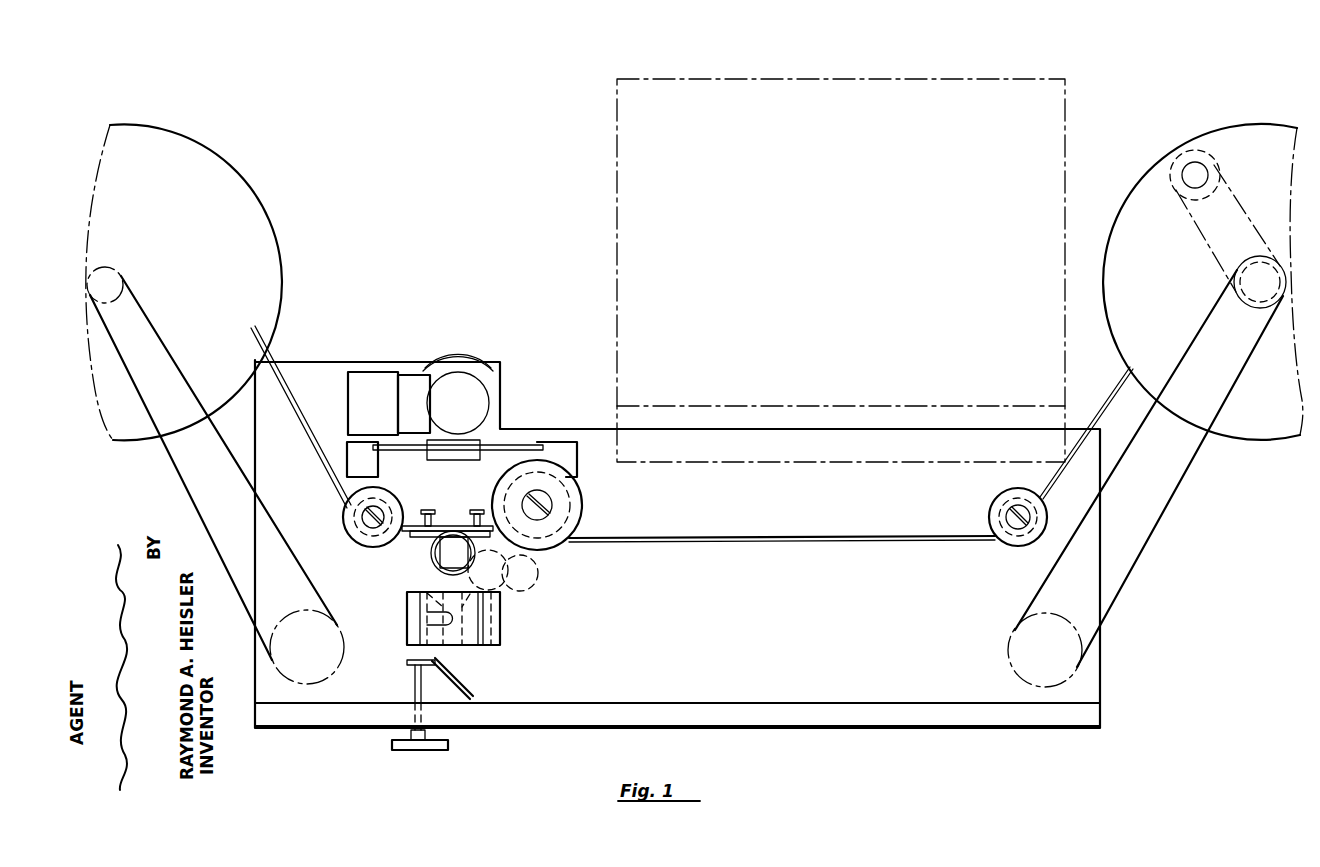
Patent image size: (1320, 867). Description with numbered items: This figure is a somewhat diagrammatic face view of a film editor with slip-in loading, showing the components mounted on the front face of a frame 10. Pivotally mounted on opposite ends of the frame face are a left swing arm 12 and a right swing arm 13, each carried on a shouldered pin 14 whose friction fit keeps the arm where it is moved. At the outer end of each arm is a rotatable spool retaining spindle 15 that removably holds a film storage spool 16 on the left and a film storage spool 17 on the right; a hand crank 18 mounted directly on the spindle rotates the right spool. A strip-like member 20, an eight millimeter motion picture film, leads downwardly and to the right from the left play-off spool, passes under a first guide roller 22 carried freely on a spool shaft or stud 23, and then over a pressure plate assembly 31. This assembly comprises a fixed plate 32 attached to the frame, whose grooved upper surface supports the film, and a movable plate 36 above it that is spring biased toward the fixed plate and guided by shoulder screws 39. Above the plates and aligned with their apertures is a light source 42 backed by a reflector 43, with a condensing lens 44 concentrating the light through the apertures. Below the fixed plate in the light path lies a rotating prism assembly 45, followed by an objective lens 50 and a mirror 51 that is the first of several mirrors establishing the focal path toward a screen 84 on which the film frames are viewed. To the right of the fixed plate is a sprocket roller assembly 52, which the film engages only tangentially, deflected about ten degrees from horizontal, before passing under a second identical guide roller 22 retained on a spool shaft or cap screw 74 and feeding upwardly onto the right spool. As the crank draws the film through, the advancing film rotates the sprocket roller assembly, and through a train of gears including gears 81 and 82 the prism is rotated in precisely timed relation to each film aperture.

The frame 10 is at (880, 718).
The left swing arm 12 is at (198, 449).
The right swing arm 13 is at (1180, 452).
The shouldered pins 14 is at (333, 653).
The spool retaining spindle 15 is at (108, 280).
The film storage spool 16 is at (257, 256).
The film storage spool 17 is at (1103, 261).
The hand crank 18 is at (1243, 232).
The strip-like member 20 is at (267, 344).
The guide roller 22 is at (375, 542).
The spool shaft or stud 23 is at (378, 513).
The pressure plate assembly 31 is at (460, 491).
The fixed plate 32 is at (427, 538).
The movable plate 36 is at (447, 505).
The shoulder screws 39 is at (478, 510).
The light source 42 is at (476, 403).
The reflector 43 is at (463, 358).
The condensing lens 44 is at (482, 443).
The rotating prism assembly 45 is at (398, 610).
The objective lens 50 is at (514, 648).
The mirror 51 is at (470, 690).
The sprocket roller assembly 52 is at (582, 518).
The spool shaft or cap screw 74 is at (1000, 538).
The gear 81 is at (540, 575).
The gear 82 is at (505, 590).
The screen 84 is at (1057, 106).